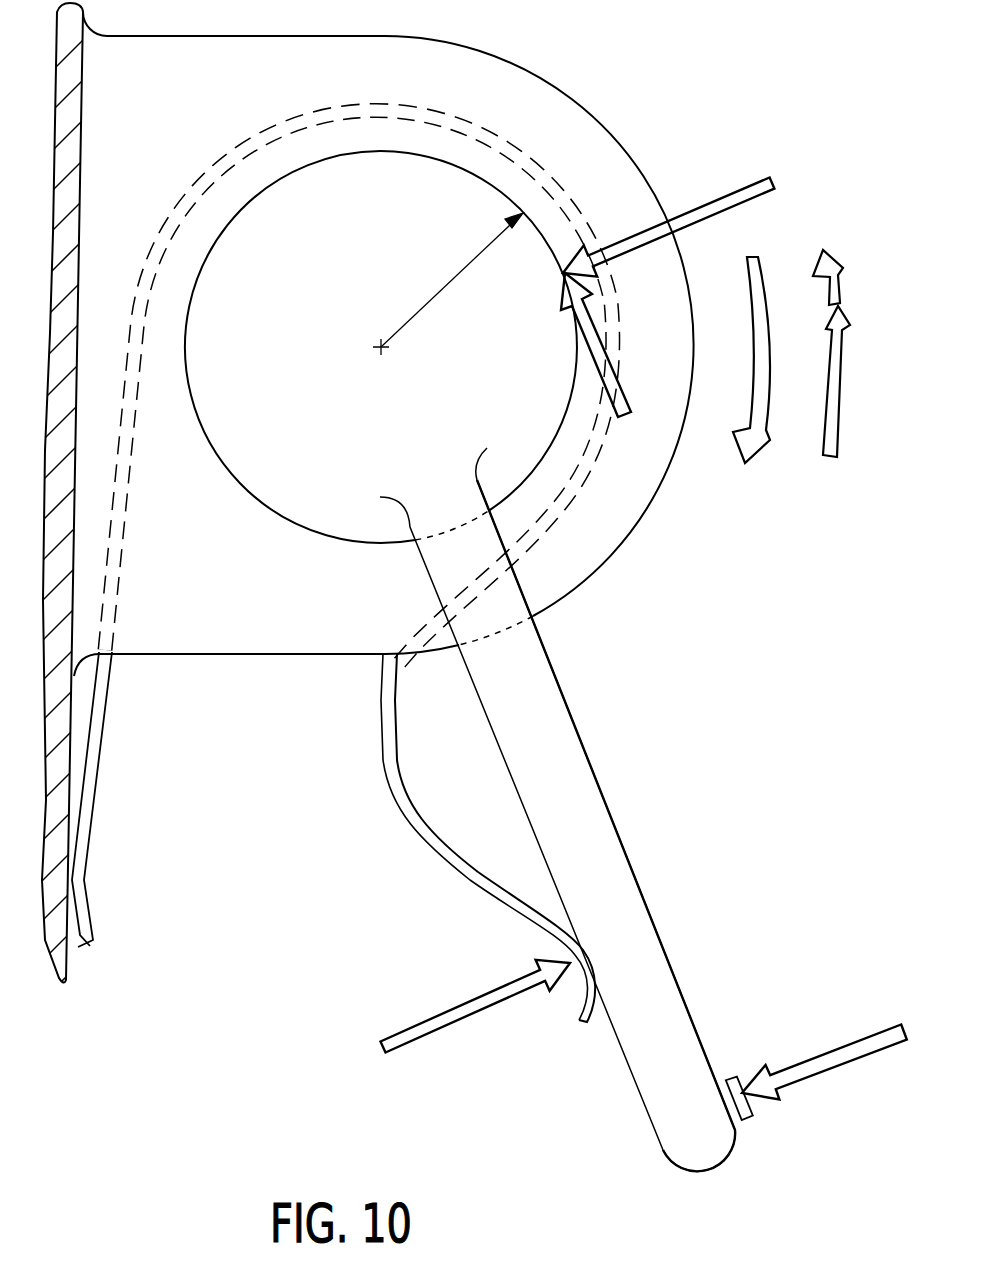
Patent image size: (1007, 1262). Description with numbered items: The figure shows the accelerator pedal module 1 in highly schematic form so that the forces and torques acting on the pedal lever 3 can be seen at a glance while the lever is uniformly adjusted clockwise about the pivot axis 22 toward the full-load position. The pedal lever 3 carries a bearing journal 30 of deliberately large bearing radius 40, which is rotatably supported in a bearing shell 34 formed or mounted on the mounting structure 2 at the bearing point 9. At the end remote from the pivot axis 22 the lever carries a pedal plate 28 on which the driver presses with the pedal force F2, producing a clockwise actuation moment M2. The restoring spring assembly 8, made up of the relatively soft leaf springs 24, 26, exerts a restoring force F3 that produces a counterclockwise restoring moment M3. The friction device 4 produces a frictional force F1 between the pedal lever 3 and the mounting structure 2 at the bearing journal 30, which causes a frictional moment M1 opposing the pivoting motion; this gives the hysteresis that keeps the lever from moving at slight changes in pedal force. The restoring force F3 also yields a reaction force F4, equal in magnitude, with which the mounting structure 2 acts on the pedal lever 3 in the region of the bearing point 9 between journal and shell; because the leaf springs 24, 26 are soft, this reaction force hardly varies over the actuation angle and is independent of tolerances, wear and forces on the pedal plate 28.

The accelerator pedal module 1 is at (320, 887).
The mounting structure 2 is at (173, 633).
The pedal lever 3 is at (580, 783).
The friction device 4 is at (245, 703).
The bearing point 9 is at (332, 662).
The restoring spring assembly 8 is at (184, 799).
The leaf spring 24 is at (184, 799).
The leaf spring 26 is at (85, 813).
The pivot axis 22 is at (383, 353).
The pedal plate 28 is at (731, 1078).
The bearing journal 30 is at (547, 410).
The bearing shell 34 is at (580, 553).
The bearing radius 40 is at (425, 303).
The frictional force F1 is at (580, 332).
The pedal force F2 is at (827, 1053).
The restoring force F3 is at (417, 1027).
The reaction force F4 is at (697, 207).
The frictional moment M1 is at (840, 272).
The actuation moment M2 is at (760, 362).
The restoring moment M3 is at (827, 410).